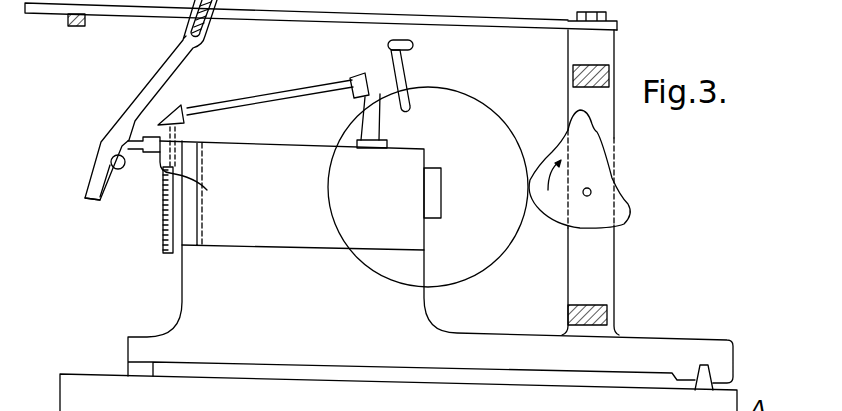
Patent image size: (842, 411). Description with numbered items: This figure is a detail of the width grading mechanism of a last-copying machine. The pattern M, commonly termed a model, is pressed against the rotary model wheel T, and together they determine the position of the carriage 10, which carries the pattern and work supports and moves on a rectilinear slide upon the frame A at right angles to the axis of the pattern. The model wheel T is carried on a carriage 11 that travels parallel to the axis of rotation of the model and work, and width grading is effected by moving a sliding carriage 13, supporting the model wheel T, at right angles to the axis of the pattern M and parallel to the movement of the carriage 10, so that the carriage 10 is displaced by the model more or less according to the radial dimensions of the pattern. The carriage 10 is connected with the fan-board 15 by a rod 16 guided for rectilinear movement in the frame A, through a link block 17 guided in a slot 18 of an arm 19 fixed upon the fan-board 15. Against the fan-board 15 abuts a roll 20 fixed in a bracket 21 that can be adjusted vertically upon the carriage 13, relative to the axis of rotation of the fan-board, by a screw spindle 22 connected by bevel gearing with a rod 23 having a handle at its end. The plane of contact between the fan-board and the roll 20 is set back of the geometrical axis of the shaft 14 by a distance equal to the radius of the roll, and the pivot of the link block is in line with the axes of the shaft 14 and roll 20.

The carriage 10 is at (605, 58).
The carriage 11 is at (398, 276).
The sliding carriage 13 is at (300, 195).
The shaft 14 is at (105, 181).
The fan-board 15 is at (98, 160).
The rod 16 is at (440, 20).
The link block 17 is at (204, 22).
The slot 18 is at (183, 31).
The arm 19 is at (170, 79).
The roll 20 is at (132, 143).
The bracket 21 is at (197, 143).
The screw spindle 22 is at (163, 232).
The rod 23 is at (262, 96).
The frame A is at (70, 35).
The model wheel T is at (493, 128).
The pattern M is at (623, 215).